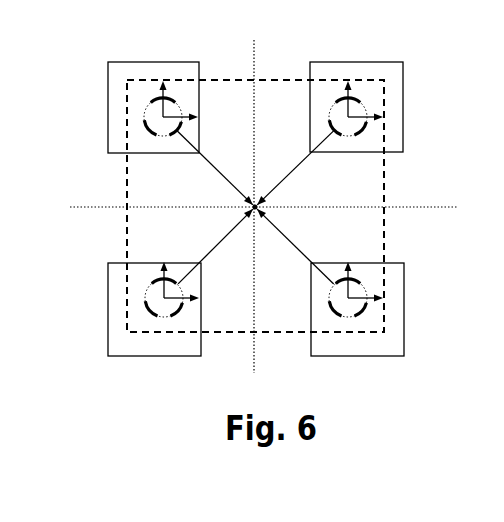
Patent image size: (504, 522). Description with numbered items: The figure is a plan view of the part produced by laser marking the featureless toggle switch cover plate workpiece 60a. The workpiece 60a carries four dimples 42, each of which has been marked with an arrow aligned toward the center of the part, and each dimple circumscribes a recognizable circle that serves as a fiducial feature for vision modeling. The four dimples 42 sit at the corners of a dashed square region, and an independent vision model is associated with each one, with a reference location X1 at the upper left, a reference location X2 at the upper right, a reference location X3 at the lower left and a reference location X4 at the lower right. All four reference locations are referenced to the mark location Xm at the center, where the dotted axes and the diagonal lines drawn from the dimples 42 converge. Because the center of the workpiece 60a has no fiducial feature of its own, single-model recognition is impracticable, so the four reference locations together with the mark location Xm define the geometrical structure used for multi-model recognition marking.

The dimples 42 is at (366, 121).
The toggle switch cover plate workpiece 60a is at (372, 232).
The reference location X1, Y1 X1 is at (166, 119).
The reference location X2, Y2 X2 is at (355, 119).
The reference location X3, Y3 X3 is at (168, 297).
The reference location X4, Y4 X4 is at (345, 296).
The mark location Xm, Ym Xm is at (306, 194).